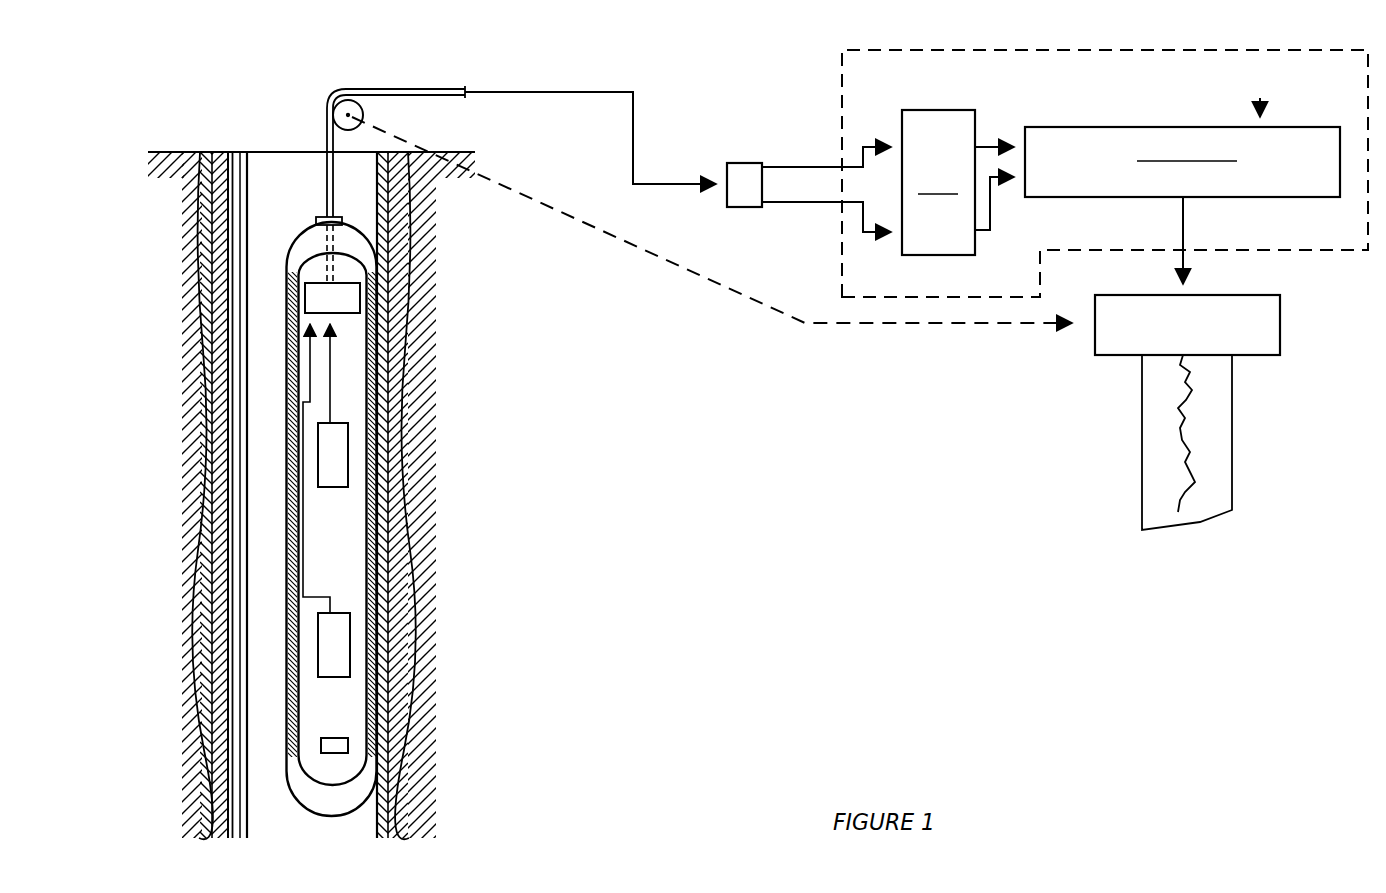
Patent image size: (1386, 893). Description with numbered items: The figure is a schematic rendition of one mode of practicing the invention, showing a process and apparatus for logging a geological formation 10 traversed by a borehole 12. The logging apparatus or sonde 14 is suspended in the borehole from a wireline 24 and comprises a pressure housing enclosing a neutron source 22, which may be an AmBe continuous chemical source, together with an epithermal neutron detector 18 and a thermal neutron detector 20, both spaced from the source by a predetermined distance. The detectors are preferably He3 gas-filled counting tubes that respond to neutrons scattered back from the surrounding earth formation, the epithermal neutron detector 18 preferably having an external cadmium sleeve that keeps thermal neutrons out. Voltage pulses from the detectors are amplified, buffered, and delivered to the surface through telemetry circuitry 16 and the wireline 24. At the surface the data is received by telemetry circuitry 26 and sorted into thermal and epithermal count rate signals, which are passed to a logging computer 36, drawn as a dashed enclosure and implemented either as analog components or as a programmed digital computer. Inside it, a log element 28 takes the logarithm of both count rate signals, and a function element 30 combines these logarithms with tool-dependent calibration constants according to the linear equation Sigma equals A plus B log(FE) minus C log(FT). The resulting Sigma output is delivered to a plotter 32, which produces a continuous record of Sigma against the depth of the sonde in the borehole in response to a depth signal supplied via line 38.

The geological formation 10 is at (176, 247).
The borehole 12 is at (366, 197).
The sonde 14 is at (376, 264).
The telemetry circuitry 16 is at (360, 300).
The epithermal neutron detector 18 is at (348, 448).
The thermal neutron detector 20 is at (350, 643).
The neutron source 22 is at (348, 745).
The wireline 24 is at (322, 176).
The surface telemetry circuitry 26 is at (745, 207).
The log element 28 is at (933, 110).
The function element 30 is at (1073, 127).
The plotter 32 is at (1232, 295).
The logging computer 36 is at (840, 78).
The depth signal line 38 is at (852, 326).